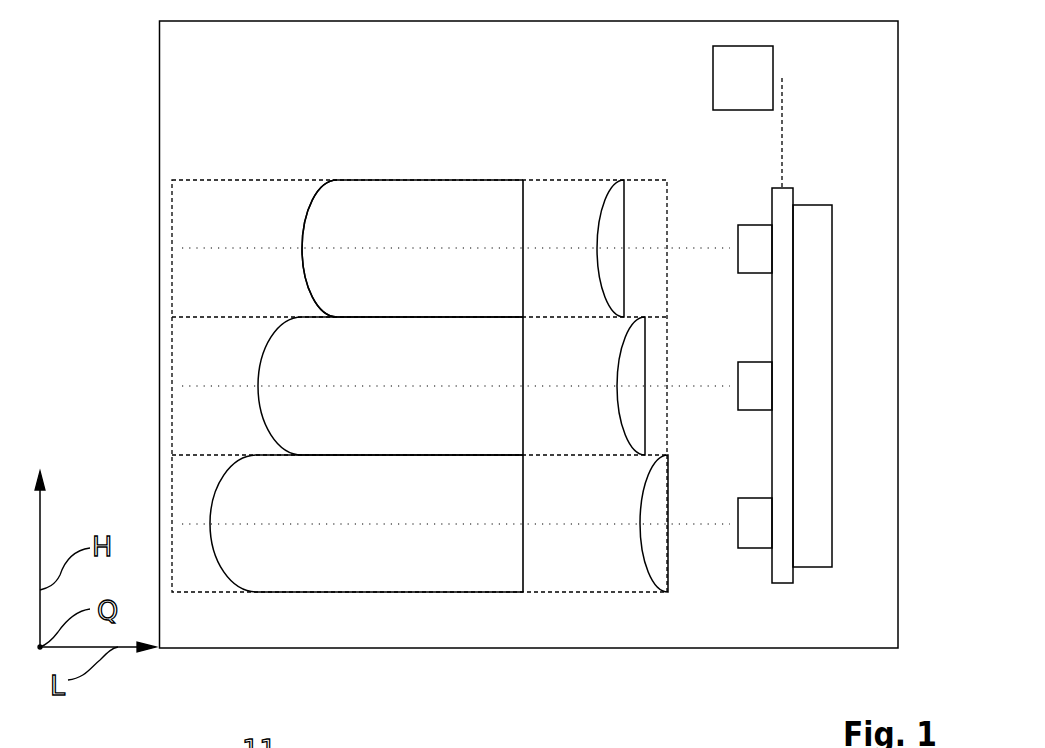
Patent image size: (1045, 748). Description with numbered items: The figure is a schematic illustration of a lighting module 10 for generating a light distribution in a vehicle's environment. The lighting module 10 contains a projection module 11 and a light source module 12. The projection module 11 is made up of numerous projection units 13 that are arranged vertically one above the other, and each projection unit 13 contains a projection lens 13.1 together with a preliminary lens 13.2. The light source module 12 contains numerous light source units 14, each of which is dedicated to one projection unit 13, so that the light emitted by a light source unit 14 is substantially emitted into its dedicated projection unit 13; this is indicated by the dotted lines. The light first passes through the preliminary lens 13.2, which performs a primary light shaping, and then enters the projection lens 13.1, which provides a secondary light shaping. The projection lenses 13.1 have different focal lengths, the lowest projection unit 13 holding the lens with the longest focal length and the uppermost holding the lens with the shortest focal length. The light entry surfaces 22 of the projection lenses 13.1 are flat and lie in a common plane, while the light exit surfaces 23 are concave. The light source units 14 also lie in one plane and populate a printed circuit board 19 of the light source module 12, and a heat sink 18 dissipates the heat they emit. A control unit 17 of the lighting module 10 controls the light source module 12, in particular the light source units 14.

The lighting module 10 is at (159, 168).
The projection module 11 is at (300, 180).
The light source module 12 is at (792, 392).
The projection unit 13 is at (172, 277).
The projection lens 13.1 is at (330, 208).
The preliminary lens 13.2 is at (611, 230).
The light source unit 14 is at (757, 237).
The control unit 17 is at (752, 62).
The heat sink 18 is at (808, 238).
The printed circuit board 19 is at (780, 205).
The light entry surface 22 is at (523, 196).
The light exit surface 23 is at (300, 265).